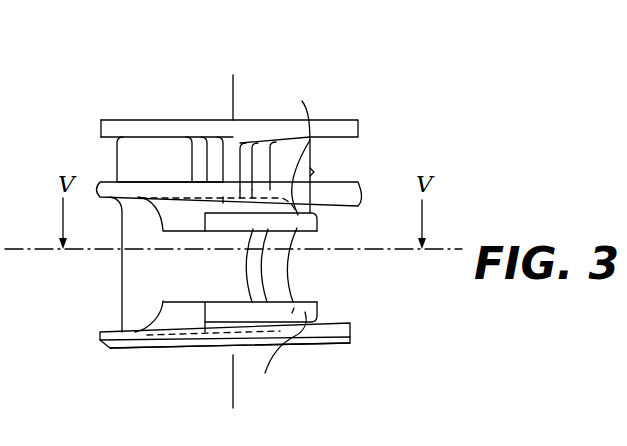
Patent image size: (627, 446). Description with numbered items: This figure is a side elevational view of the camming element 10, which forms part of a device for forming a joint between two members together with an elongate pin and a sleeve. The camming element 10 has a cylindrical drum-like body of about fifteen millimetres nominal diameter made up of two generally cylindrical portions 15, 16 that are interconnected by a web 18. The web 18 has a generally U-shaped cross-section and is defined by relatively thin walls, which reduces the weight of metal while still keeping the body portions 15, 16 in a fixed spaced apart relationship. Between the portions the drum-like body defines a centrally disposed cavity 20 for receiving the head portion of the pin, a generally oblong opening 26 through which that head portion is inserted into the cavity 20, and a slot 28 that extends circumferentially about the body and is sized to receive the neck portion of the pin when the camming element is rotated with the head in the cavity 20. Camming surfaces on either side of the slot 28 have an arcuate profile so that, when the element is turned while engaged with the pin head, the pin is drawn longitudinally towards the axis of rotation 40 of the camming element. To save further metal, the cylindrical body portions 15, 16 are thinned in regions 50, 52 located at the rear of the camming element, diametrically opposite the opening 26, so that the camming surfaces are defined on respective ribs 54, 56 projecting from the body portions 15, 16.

The camming element 10 is at (358, 354).
The cylindrical portion 15 is at (128, 152).
The cylindrical portion 16 is at (148, 350).
The web 18 is at (130, 312).
The cavity 20 is at (212, 287).
The opening 26 is at (144, 276).
The slot 28 is at (322, 266).
The axis of rotation 40 is at (233, 95).
The thinned region 50 is at (348, 228).
The thinned region 52 is at (338, 307).
The rib 54 is at (300, 146).
The rib 56 is at (277, 354).